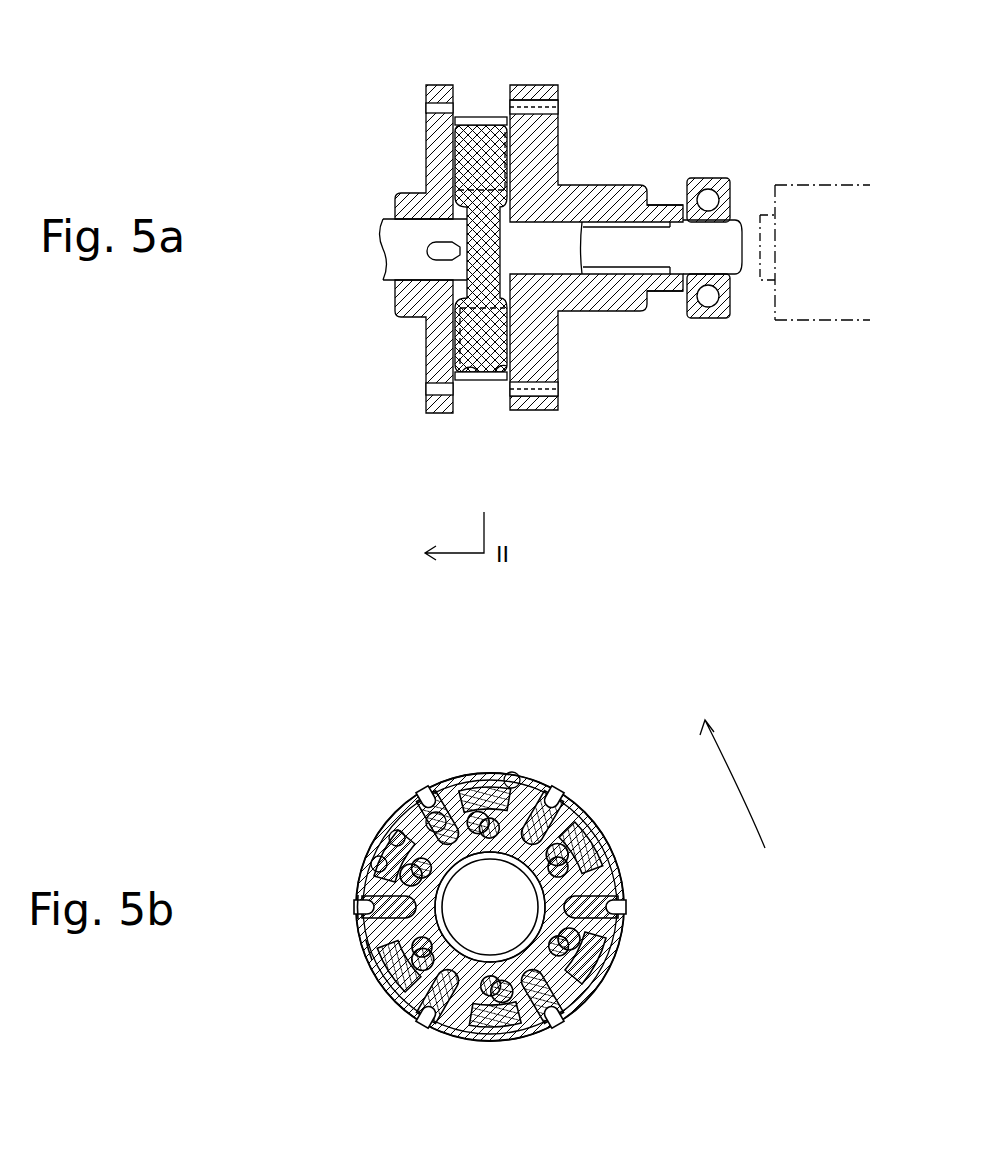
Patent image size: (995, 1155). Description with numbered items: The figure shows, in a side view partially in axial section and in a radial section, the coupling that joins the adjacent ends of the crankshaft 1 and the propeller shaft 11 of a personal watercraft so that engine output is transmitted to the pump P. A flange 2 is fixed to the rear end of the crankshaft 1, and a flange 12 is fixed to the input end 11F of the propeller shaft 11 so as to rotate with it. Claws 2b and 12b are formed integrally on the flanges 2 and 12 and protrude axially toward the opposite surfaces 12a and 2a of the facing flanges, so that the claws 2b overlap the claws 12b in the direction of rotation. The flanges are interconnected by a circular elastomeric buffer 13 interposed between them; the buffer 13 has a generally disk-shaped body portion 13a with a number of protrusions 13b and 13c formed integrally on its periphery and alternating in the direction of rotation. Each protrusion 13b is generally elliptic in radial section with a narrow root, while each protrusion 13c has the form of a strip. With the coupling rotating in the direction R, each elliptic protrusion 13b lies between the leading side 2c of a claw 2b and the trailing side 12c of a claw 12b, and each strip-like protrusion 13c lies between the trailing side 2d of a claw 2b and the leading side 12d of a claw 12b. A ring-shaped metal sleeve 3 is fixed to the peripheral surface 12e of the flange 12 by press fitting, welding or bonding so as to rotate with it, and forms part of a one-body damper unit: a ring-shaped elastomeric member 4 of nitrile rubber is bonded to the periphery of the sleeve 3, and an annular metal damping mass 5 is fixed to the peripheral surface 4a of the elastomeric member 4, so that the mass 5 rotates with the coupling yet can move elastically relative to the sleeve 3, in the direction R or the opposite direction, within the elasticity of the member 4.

In FIG. 5a, the crankshaft 1 is at (395, 265).
In FIG. 5a, the flange 2 is at (426, 143).
In FIG. 5a, the opposite surface of flange 2 2a is at (460, 400).
In FIG. 5a, the claws of flange 2 2b is at (467, 118).
In FIG. 5b, the claws of flange 2 2b is at (478, 778).
In FIG. 5b, the leading side of claw 2b 2c is at (362, 912).
In FIG. 5b, the trailing side of claw 2b 2d is at (378, 863).
In FIG. 5a, the metal sleeve 3 is at (557, 113).
In FIG. 5a, the elastomeric member 4 is at (558, 109).
In FIG. 5a, the peripheral surface of elastomeric member 4a is at (556, 106).
In FIG. 5a, the damping mass 5 is at (545, 88).
In FIG. 5a, the propeller shaft 11 is at (612, 183).
In FIG. 5a, the input end of propeller shaft 11F is at (617, 252).
In FIG. 5a, the flange 12 is at (558, 140).
In FIG. 5b, the flange 12 is at (490, 907).
In FIG. 5a, the opposite surface of flange 12 12a is at (503, 405).
In FIG. 5a, the claws of flange 12 12b is at (488, 380).
In FIG. 5b, the claws of flange 12 12b is at (547, 790).
In FIG. 5b, the trailing side of claw 12b 12c is at (372, 960).
In FIG. 5b, the leading side of claw 12b 12d is at (397, 837).
In FIG. 5a, the peripheral surface of flange 12 12e is at (533, 405).
In FIG. 5a, the elastomeric buffer 13 is at (482, 132).
In FIG. 5b, the elastomeric buffer 13 is at (560, 1010).
In FIG. 5b, the body portion 13a is at (555, 912).
In FIG. 5b, the elliptic protrusions 13b is at (437, 822).
In FIG. 5b, the strip-like protrusions 13c is at (512, 777).
In FIG. 5a, the pump P is at (819, 195).
In FIG. 5b, the direction of rotation R is at (748, 782).